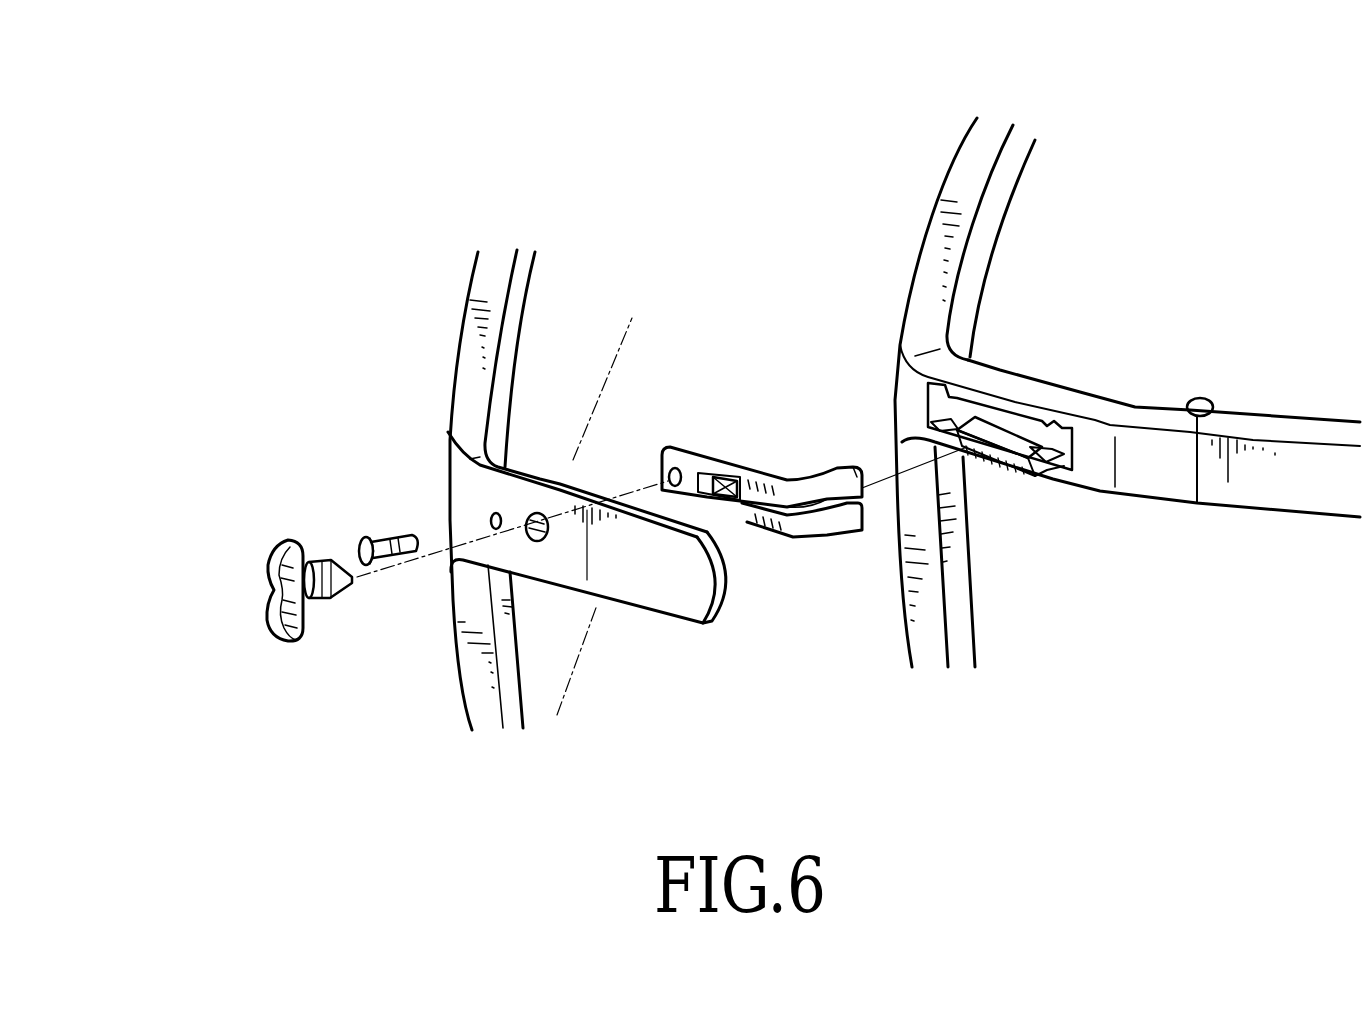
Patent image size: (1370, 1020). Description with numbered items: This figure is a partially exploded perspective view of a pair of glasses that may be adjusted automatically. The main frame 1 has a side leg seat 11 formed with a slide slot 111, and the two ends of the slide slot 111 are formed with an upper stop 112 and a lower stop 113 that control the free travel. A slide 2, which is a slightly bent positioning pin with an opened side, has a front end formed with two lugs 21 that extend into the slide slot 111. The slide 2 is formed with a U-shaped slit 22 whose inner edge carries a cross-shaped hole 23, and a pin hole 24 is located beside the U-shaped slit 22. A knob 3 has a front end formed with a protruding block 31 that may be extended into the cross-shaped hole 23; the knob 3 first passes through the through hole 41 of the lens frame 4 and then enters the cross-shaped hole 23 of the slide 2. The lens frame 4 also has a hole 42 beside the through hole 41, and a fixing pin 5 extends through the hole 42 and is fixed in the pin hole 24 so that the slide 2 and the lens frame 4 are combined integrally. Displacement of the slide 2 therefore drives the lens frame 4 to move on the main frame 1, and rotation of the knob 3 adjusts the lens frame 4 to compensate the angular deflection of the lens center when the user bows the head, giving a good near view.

The main frame 1 is at (962, 175).
The side leg seat 11 is at (1033, 407).
The slide slot 111 is at (1002, 417).
The upper stop 112 is at (1047, 470).
The lower stop 113 is at (950, 422).
The slide 2 is at (772, 462).
The lug 21 is at (857, 530).
The U-shaped slit 22 is at (790, 523).
The cross-shaped hole 23 is at (730, 507).
The pin hole 24 is at (676, 468).
The knob 3 is at (260, 537).
The protruding block 31 is at (335, 583).
The lens frame 4 is at (643, 598).
The through hole 41 is at (539, 513).
The hole 42 is at (493, 513).
The fixing pin 5 is at (383, 542).